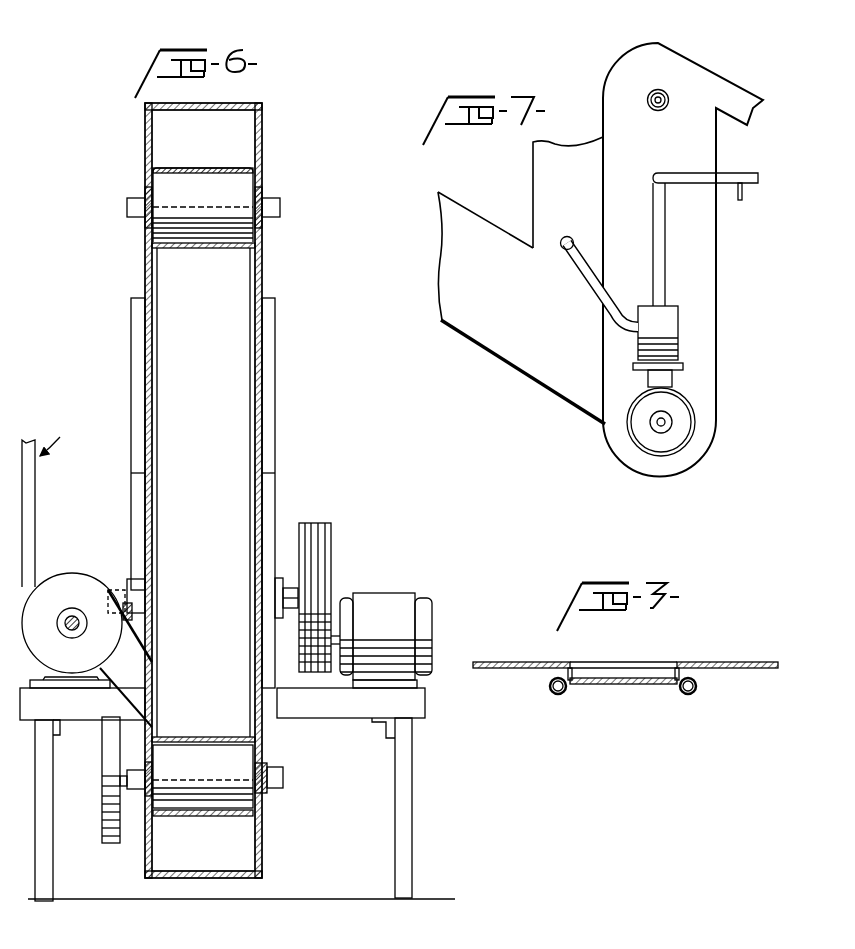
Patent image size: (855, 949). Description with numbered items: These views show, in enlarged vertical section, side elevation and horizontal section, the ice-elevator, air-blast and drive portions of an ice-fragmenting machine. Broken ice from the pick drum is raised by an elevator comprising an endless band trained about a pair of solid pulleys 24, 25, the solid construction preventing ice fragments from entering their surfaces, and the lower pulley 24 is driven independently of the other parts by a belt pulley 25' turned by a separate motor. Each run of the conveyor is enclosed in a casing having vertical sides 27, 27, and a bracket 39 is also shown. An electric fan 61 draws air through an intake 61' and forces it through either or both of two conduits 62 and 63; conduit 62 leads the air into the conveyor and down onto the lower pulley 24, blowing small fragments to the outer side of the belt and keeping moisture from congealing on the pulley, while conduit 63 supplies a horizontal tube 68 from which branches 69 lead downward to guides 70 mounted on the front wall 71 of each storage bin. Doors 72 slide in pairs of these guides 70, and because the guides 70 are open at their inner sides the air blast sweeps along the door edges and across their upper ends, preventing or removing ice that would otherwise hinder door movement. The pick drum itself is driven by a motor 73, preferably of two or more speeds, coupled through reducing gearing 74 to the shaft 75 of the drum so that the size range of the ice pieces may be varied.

In FIG. 6, the lower pulley 24 is at (233, 795).
In FIG. 6, the pulley 25 is at (221, 199).
In FIG. 6, the belt pulley 25' is at (101, 797).
In FIG. 7, the belt pulley 25' is at (698, 422).
In FIG. 6, the vertical sides 27 is at (257, 507).
In FIG. 7, the vertical sides 27 is at (706, 278).
In FIG. 7, the bracket 39 is at (691, 260).
In FIG. 6, the electric fan 61 is at (72, 643).
In FIG. 7, the electric fan 61 is at (702, 345).
In FIG. 7, the intake 61' is at (580, 282).
In FIG. 6, the conduit 62 is at (138, 675).
In FIG. 6, the conduit 63 is at (30, 517).
In FIG. 7, the conduit 63 is at (666, 254).
In FIG. 7, the horizontal tube 68 is at (742, 171).
In FIG. 7, the branches 69 is at (744, 195).
In FIG. 8, the guides 70 is at (556, 696).
In FIG. 8, the front wall 71 is at (727, 660).
In FIG. 8, the doors 72 is at (632, 685).
In FIG. 6, the motor 73 is at (392, 607).
In FIG. 6, the reducing gearing 74 is at (332, 543).
In FIG. 6, the shaft 75 is at (299, 597).